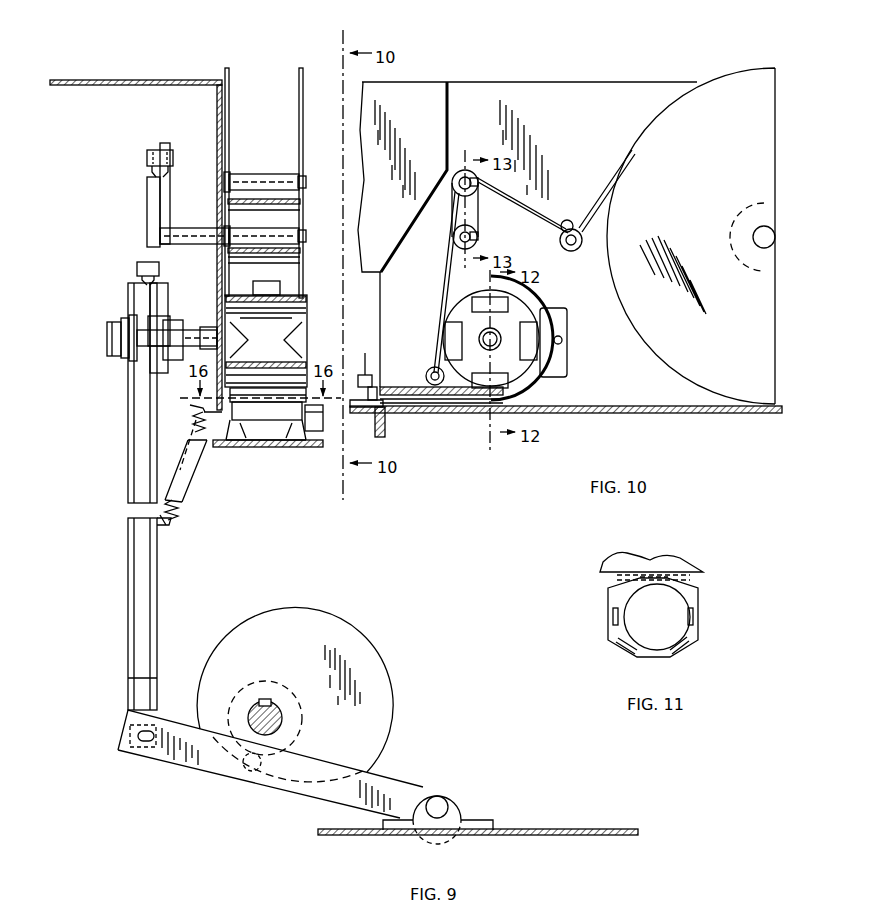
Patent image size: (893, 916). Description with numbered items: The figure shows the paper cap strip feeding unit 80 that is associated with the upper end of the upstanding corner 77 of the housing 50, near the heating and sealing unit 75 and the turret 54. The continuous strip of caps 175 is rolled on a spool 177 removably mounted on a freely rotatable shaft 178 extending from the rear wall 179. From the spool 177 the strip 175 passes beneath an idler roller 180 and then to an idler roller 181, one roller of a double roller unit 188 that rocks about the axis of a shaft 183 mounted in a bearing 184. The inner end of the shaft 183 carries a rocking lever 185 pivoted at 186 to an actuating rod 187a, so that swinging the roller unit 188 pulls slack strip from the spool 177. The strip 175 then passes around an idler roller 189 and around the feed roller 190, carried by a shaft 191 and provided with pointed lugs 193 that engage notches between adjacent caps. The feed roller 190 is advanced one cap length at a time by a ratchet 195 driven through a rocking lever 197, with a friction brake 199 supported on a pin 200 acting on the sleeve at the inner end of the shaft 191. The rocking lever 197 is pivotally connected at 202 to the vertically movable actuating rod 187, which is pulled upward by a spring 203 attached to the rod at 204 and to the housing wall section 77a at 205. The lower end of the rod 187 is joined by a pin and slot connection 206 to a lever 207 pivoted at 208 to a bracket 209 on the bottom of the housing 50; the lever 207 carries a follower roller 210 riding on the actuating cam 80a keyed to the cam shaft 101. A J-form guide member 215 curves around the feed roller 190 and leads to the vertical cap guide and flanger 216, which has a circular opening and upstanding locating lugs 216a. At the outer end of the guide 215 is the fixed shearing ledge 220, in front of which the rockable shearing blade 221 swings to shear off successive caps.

In FIG. 9, the housing 50 is at (531, 828).
In FIG. 9, the turret 54 is at (241, 448).
In FIG. 10, the heating and sealing unit 75 is at (431, 90).
In FIG. 9, the upstanding corner of housing 77 is at (96, 79).
In FIG. 10, the upstanding corner of housing 77 is at (520, 80).
In FIG. 10, the housing wall section 77a is at (698, 415).
In FIG. 10, the paper cap strip feeding unit 80 is at (730, 66).
In FIG. 9, the actuating cam 80a is at (373, 688).
In FIG. 9, the cam shaft 101 is at (254, 700).
In FIG. 10, the continuous strip of caps 175 is at (441, 292).
In FIG. 9, the spool 177 is at (297, 85).
In FIG. 10, the spool 177 is at (636, 155).
In FIG. 10, the freely rotatable shaft 178 is at (757, 232).
In FIG. 10, the rear wall of housing 179 is at (617, 92).
In FIG. 10, the idler roller 180 is at (573, 228).
In FIG. 9, the idler roller 181 is at (258, 172).
In FIG. 10, the idler roller 181 is at (455, 177).
In FIG. 9, the shaft 183 is at (287, 226).
In FIG. 10, the shaft 183 is at (460, 243).
In FIG. 9, the bearing 184 is at (192, 226).
In FIG. 9, the rocking lever 185 is at (166, 190).
In FIG. 9, the pivot 186 is at (147, 157).
In FIG. 9, the actuating rod 187 is at (143, 452).
In FIG. 9, the actuating rod 187a is at (152, 205).
In FIG. 10, the double roller unit 188 is at (483, 218).
In FIG. 9, the idler roller 189 is at (256, 373).
In FIG. 10, the idler roller 189 is at (428, 369).
In FIG. 9, the feed roller 190 is at (280, 295).
In FIG. 10, the feed roller 190 is at (514, 318).
In FIG. 9, the shaft 191 is at (107, 339).
In FIG. 10, the shaft 191 is at (482, 338).
In FIG. 9, the pointed lugs 193 is at (293, 330).
In FIG. 9, the ratchet 195 is at (157, 327).
In FIG. 9, the rocking lever 197 is at (168, 308).
In FIG. 9, the friction brake 199 is at (126, 329).
In FIG. 9, the pin 200 is at (151, 343).
In FIG. 9, the pivotal connection 202 is at (137, 268).
In FIG. 9, the spring 203 is at (174, 506).
In FIG. 9, the spring attachment point 204 is at (165, 526).
In FIG. 9, the spring attachment point 205 is at (190, 415).
In FIG. 9, the pin and slot connection 206 is at (141, 735).
In FIG. 9, the lever 207 is at (226, 765).
In FIG. 9, the pivot 208 is at (443, 800).
In FIG. 9, the bracket 209 is at (471, 822).
In FIG. 9, the roller 210 is at (249, 771).
In FIG. 10, the guide member 215 is at (415, 398).
In FIG. 11, the guide member 215 is at (661, 566).
In FIG. 9, the cap guide and flanger 216 is at (340, 438).
In FIG. 11, the cap guide and flanger 216 is at (695, 636).
In FIG. 11, the locating lugs 216a is at (623, 647).
In FIG. 10, the fixed shearing blade or ledge 220 is at (374, 402).
In FIG. 10, the rockable shearing blade 221 is at (365, 373).